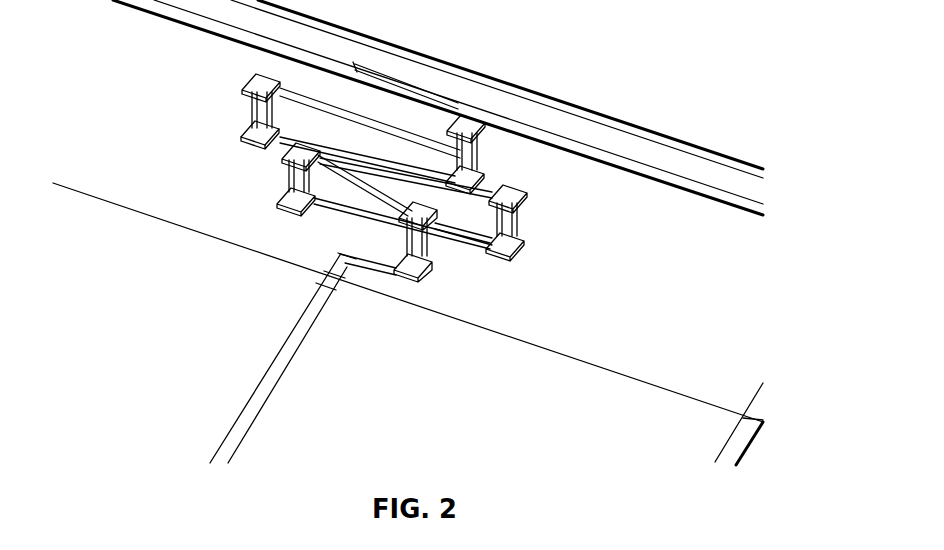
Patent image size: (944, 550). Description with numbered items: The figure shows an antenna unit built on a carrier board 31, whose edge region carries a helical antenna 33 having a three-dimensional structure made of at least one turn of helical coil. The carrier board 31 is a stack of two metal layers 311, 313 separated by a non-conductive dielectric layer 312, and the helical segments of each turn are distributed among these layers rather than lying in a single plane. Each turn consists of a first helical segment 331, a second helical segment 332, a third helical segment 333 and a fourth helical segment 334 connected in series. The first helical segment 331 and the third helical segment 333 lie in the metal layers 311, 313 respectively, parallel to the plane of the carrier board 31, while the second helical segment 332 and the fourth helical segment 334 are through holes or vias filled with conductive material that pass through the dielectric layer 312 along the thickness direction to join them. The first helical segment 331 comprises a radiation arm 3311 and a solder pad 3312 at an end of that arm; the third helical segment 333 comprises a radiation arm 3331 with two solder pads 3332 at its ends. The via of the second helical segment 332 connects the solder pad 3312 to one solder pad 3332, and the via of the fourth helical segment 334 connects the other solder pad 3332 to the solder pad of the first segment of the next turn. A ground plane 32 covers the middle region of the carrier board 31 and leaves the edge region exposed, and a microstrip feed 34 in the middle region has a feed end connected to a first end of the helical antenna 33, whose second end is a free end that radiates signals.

The carrier board 31 is at (438, 107).
The metal layer 311 is at (599, 113).
The non-conductive dielectric layer 312 is at (622, 138).
The metal layer 313 is at (653, 174).
The ground plane 32 is at (712, 405).
The helical antenna 33 is at (385, 172).
The first helical segment 331 is at (457, 93).
The radiation arm 3311 is at (445, 110).
The solder pad 3312 is at (476, 120).
The second helical segment 332 is at (478, 165).
The solder pad 3332 is at (486, 186).
The third helical segment 333 is at (229, 150).
The radiation arm 3331 is at (263, 148).
The fourth helical segment 334 is at (252, 114).
The microstrip feed 34 is at (300, 345).